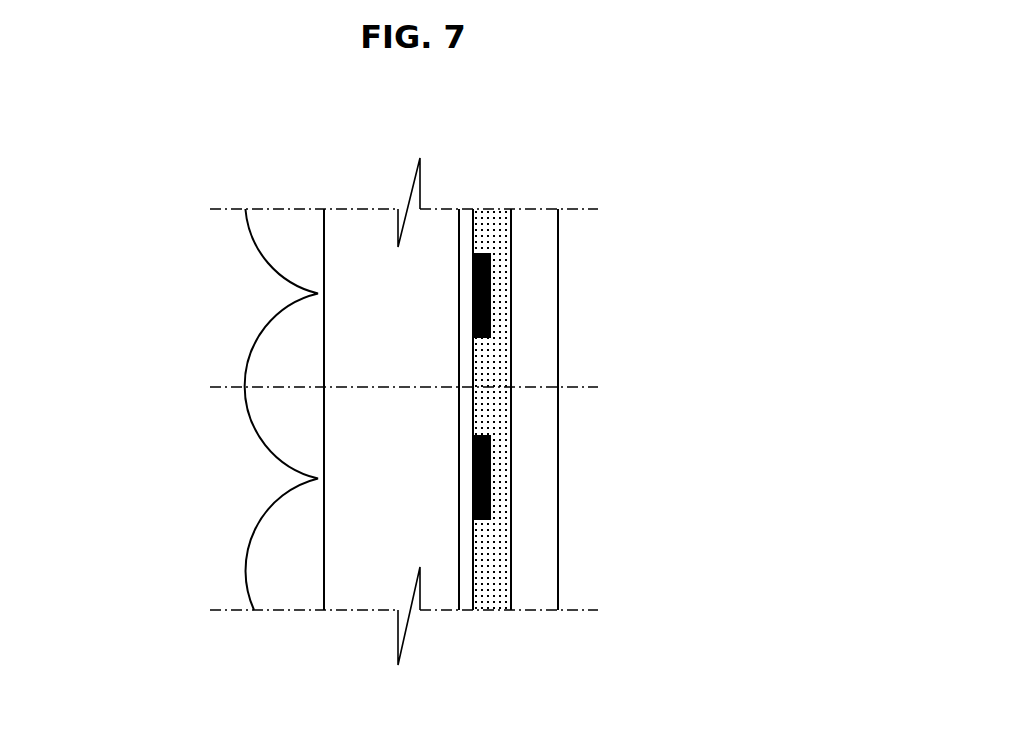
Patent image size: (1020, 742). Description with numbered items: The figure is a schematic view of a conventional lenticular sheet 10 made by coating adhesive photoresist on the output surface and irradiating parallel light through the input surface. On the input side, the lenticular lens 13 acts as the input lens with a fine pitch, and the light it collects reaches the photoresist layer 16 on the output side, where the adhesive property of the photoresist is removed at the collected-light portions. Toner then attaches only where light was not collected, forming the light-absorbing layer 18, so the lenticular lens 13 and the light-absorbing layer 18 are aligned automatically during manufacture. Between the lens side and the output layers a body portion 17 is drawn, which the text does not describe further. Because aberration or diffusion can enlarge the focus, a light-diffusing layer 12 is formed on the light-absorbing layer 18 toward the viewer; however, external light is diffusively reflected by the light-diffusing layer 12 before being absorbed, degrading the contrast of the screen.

The lenticular sheet 10 is at (511, 366).
The light-diffusing layer 12 is at (499, 446).
The lenticular lens 13 is at (281, 445).
The photoresist layer 16 is at (460, 446).
The substrate 17 is at (353, 445).
The light-absorbing layer 18 is at (549, 386).